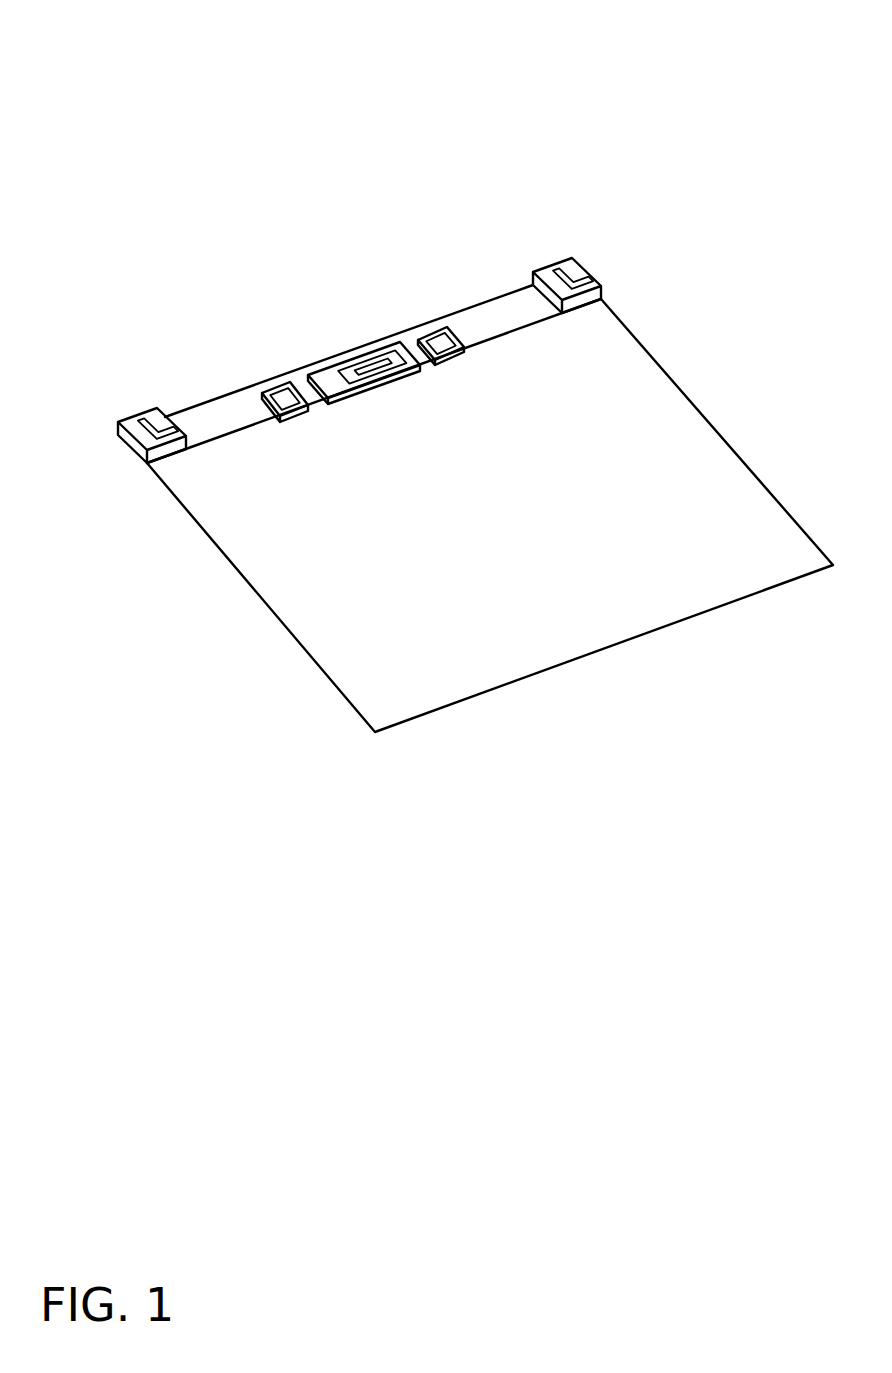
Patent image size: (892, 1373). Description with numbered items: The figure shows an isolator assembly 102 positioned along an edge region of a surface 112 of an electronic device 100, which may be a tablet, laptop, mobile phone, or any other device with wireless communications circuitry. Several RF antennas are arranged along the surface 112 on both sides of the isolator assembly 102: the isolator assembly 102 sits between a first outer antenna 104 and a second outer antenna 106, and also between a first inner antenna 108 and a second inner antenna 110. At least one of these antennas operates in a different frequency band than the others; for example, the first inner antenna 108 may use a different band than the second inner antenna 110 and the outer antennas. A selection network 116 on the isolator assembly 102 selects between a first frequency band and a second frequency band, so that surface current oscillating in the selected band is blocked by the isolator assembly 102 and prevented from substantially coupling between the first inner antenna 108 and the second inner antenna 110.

The electronic device 100 is at (442, 367).
The isolator assembly 102 is at (362, 363).
The first outer antenna 104 is at (137, 412).
The second outer antenna 106 is at (548, 266).
The first inner antenna 108 is at (278, 391).
The second inner antenna 110 is at (440, 330).
The surface 112 is at (212, 413).
The selection network 116 is at (367, 363).